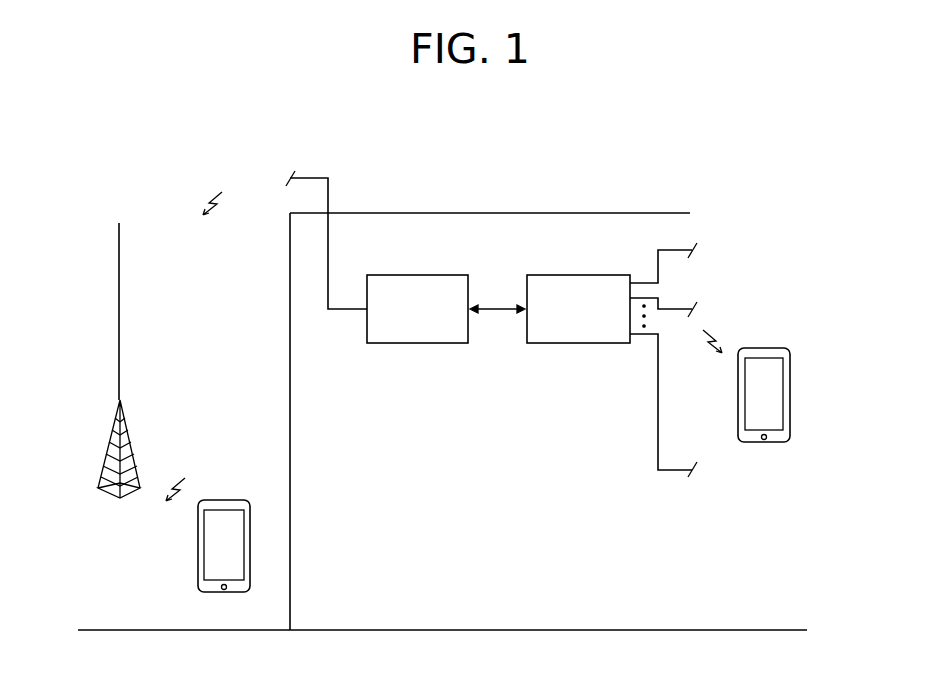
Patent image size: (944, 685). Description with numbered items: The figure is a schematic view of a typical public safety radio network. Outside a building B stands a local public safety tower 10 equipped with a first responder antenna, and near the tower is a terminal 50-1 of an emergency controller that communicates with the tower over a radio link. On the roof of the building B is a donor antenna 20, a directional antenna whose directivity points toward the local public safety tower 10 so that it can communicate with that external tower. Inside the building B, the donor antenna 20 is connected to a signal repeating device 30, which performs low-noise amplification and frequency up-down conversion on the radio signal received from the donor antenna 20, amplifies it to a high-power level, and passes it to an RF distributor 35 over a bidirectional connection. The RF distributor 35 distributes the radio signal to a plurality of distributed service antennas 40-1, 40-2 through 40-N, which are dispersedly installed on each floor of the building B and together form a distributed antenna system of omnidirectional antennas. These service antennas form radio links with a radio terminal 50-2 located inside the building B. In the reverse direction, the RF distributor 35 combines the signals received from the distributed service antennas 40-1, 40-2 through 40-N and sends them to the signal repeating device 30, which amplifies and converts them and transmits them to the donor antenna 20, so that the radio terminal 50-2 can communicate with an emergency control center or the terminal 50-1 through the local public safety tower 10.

The local public safety tower 10 is at (118, 250).
The donor antenna 20 is at (290, 178).
The building B is at (463, 212).
The signal repeating device 30 is at (417, 345).
The RF distributor 35 is at (593, 345).
The distributed service antenna 40-1 is at (692, 252).
The distributed service antenna 40-2 is at (692, 310).
The distributed service antenna 40-N is at (692, 470).
The terminal of an emergency controller 50-1 is at (198, 545).
The radio terminal 50-2 is at (790, 395).